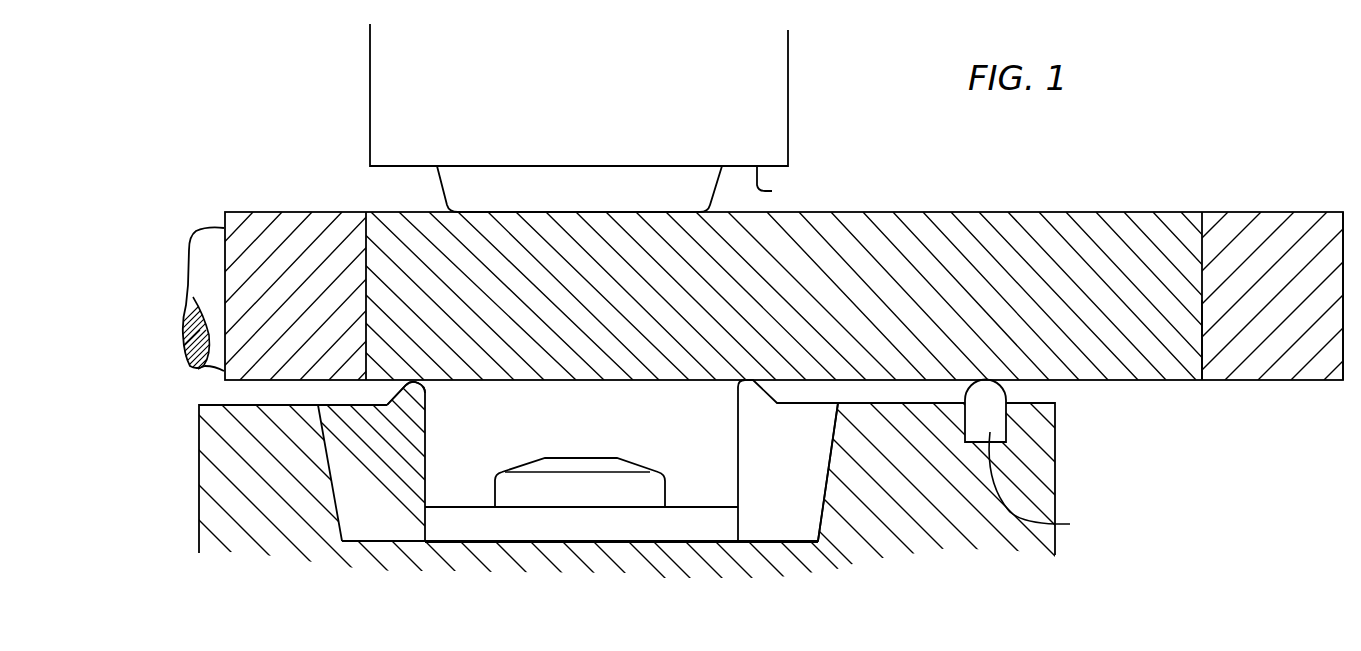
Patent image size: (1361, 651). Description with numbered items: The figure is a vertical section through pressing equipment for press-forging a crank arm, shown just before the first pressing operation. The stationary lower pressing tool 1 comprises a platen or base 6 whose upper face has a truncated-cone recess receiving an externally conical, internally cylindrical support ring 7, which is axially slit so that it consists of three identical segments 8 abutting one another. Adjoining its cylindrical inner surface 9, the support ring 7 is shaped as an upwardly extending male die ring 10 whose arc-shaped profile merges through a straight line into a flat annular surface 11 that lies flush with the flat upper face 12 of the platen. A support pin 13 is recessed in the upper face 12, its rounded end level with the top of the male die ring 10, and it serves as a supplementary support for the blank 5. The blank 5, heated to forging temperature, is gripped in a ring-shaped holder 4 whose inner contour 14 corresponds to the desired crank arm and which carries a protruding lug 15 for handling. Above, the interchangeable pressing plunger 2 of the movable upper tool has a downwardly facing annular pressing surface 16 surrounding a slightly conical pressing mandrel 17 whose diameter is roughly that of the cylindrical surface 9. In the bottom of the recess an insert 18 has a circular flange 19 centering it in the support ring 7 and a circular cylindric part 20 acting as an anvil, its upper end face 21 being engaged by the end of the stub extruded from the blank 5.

The stationary lower pressing tool 1 is at (1064, 460).
The pressing plunger 2 is at (792, 99).
The ring-shaped holder 4 is at (1230, 233).
The blank 5 is at (1028, 232).
The platen or base 6 is at (1043, 498).
The support ring 7 is at (437, 431).
The segments 8 is at (758, 455).
The cylindrical inner surface 9 is at (738, 413).
The male die ring 10 is at (413, 385).
The flat annular surface 11 is at (365, 400).
The upper face of the platen 12 is at (1042, 406).
The support pin 13 is at (1053, 485).
The inner contour 14 is at (1198, 360).
The protruding lug 15 is at (212, 240).
The annular pressing surface 16 is at (784, 185).
The pressing mandrel 17 is at (580, 180).
The insert 18 is at (470, 500).
The circular flange 19 is at (722, 524).
The circular cylindric part 20 is at (652, 494).
The upper end face 21 is at (574, 458).